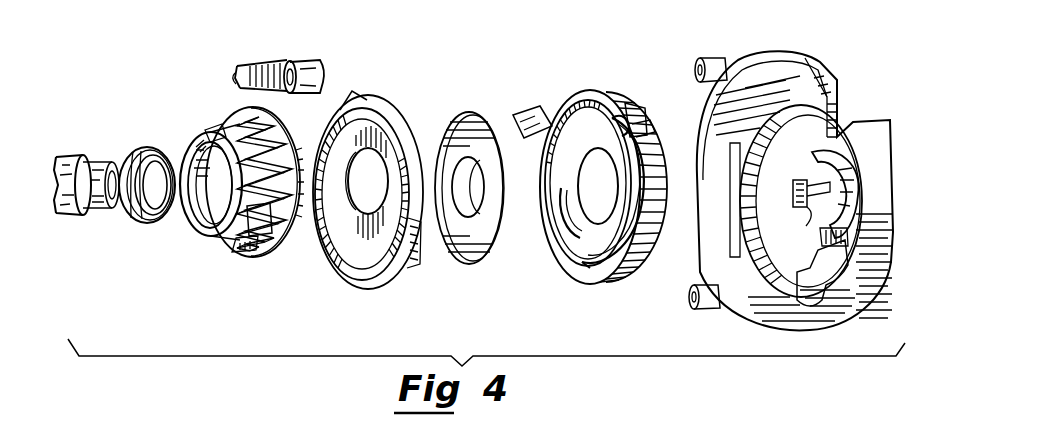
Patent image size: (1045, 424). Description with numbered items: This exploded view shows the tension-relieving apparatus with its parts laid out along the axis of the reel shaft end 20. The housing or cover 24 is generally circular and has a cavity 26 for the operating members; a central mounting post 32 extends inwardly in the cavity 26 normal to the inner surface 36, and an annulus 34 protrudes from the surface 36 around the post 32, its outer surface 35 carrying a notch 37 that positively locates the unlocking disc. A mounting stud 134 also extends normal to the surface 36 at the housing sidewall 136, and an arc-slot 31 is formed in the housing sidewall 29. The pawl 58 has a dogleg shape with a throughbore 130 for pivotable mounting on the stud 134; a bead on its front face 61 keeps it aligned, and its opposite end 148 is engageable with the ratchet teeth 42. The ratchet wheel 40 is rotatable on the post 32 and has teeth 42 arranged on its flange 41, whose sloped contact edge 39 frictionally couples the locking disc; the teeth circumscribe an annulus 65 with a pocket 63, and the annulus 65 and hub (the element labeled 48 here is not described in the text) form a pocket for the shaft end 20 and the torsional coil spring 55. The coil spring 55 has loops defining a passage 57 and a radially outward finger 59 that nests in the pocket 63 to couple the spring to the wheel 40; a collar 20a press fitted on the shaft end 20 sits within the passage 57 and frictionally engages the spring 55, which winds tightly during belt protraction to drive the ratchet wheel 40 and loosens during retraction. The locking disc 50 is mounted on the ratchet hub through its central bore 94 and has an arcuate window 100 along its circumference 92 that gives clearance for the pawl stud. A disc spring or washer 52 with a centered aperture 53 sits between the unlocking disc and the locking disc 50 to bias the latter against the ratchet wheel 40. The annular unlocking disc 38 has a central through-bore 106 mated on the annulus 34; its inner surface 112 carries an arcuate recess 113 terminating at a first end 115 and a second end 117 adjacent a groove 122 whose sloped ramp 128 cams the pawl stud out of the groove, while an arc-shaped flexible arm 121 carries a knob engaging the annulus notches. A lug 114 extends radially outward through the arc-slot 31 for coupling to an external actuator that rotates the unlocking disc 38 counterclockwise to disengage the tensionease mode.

The shaft end 20 is at (80, 165).
The collar 20a is at (97, 217).
The housing 24 is at (799, 177).
The cavity 26 is at (743, 300).
The housing sidewall 29 is at (877, 227).
The arc-slot 31 is at (730, 214).
The central mounting post 32 is at (817, 170).
The annulus 34 is at (792, 199).
The outer surface of annulus 35 is at (860, 262).
The inner surface 36 is at (793, 125).
The annulus notch 37 is at (794, 218).
The unlocking disc 38 is at (599, 170).
The sloped wheel surface 39 is at (293, 228).
The ratchet wheel 40 is at (483, 209).
The ratchet flange 41 is at (270, 255).
The ratchet teeth 42 is at (228, 252).
The hub 48 is at (207, 217).
The locking disc 50 is at (411, 277).
The disc spring 52 is at (481, 164).
The aperture 53 is at (480, 185).
The torsional coil spring 55 is at (140, 225).
The passage 57 is at (150, 170).
The pawl 58 is at (259, 65).
The finger 59 is at (137, 143).
The pawl front face 61 is at (260, 66).
The pocket 63 is at (203, 148).
The annulus 65 is at (210, 237).
The circumference 92 is at (367, 290).
The disc central bore 94 is at (358, 192).
The arcuate window 100 is at (372, 195).
The central through-bore 106 is at (586, 187).
The disc inner surface 112 is at (599, 208).
The arcuate track 113 is at (590, 262).
The lug 114 is at (532, 110).
The first end 115 is at (637, 104).
The second end 117 is at (638, 182).
The flexible arm 121 is at (572, 212).
The groove 122 is at (652, 130).
The sloped ramp 128 is at (623, 132).
The throughbore 130 is at (290, 86).
The mounting stud 134 is at (810, 62).
The housing sidewall 136 is at (760, 67).
The pawl end 148 is at (237, 83).